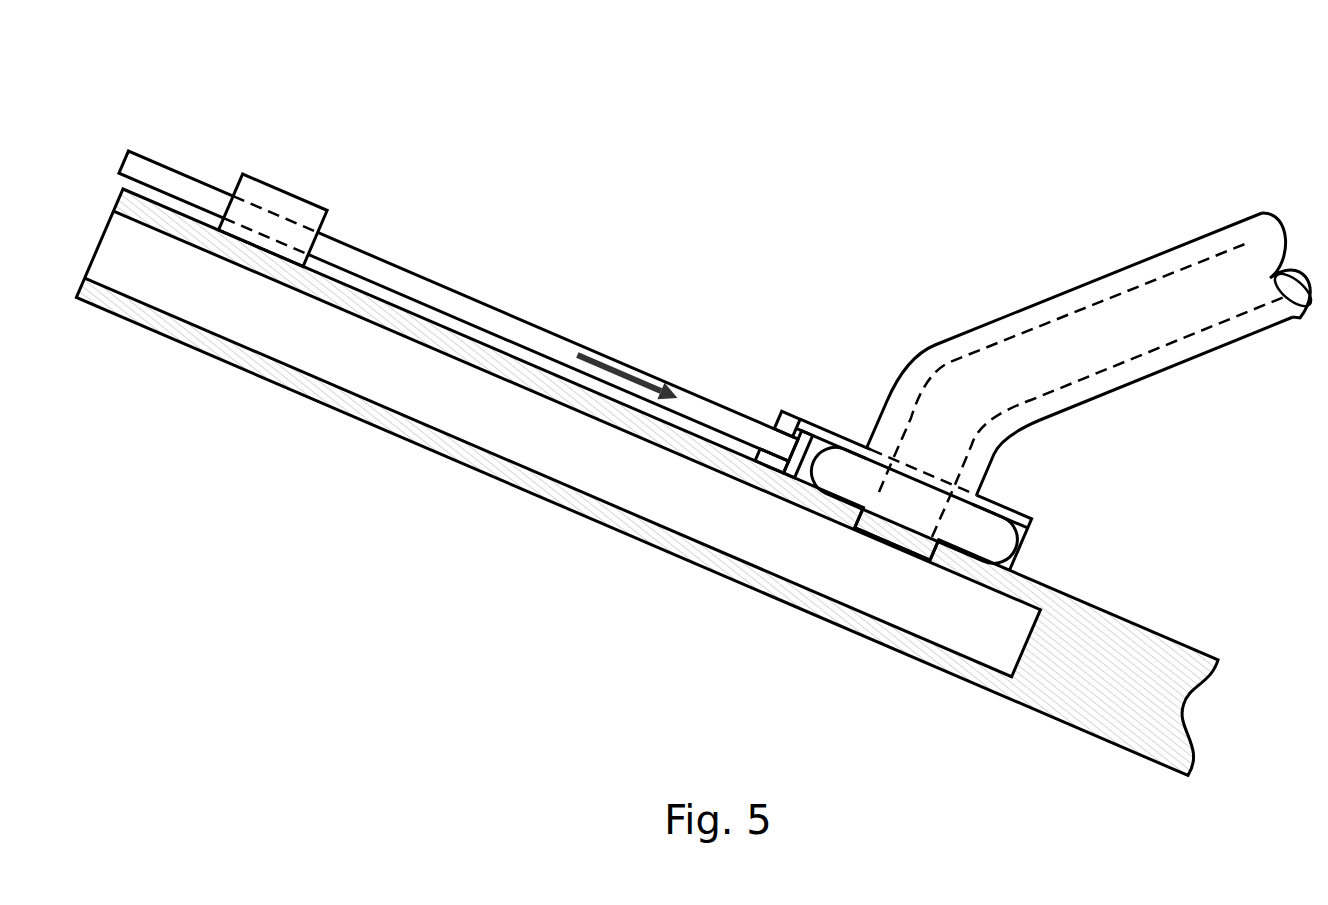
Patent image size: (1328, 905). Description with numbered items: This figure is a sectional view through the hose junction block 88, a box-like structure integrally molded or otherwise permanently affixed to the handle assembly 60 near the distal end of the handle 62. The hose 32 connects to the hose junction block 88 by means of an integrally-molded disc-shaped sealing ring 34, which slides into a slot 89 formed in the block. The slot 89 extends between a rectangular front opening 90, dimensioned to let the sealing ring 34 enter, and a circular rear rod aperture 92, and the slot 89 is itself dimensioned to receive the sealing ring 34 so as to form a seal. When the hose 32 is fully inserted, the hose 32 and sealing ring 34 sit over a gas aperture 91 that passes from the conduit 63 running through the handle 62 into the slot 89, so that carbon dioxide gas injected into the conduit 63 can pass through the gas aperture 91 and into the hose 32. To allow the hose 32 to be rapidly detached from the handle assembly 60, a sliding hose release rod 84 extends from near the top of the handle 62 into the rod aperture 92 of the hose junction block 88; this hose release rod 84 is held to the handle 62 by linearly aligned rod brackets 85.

The handle assembly 60 is at (670, 128).
The hose release rod 84 is at (178, 168).
The rod brackets 85 is at (290, 194).
The handle 62 is at (140, 323).
The conduit 63 is at (247, 297).
The rod aperture 92 is at (775, 425).
The hose junction block 88 is at (790, 410).
The hose 32 is at (1077, 278).
The slot 89 is at (1000, 502).
The sealing ring 34 is at (983, 540).
The front opening 90 is at (1028, 557).
The gas aperture 91 is at (887, 531).